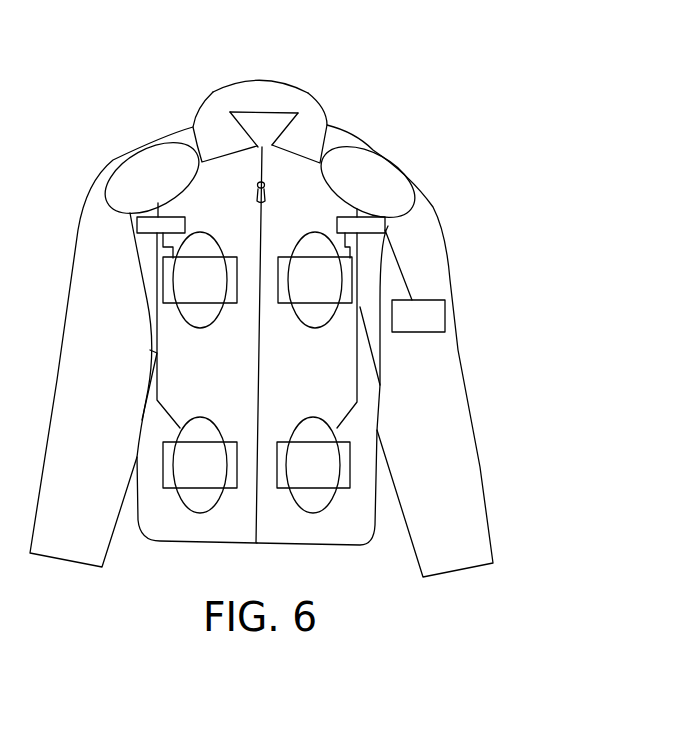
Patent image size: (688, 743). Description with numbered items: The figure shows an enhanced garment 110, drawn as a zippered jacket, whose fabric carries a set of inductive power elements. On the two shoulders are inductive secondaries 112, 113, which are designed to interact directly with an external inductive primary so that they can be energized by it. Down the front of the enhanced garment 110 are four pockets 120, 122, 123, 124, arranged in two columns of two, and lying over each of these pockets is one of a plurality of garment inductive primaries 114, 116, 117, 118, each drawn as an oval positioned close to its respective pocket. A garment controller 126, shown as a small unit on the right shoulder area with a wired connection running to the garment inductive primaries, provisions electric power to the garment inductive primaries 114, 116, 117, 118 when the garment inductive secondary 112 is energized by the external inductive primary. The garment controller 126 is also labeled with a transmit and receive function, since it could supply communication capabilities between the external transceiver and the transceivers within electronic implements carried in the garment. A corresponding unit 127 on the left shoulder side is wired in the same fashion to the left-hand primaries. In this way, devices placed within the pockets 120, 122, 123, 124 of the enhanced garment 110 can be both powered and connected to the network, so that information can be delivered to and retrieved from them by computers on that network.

The enhanced garment 110 is at (449, 212).
The inductive secondary 112 is at (353, 140).
The inductive secondary 113 is at (163, 142).
The garment inductive primary 114 is at (210, 233).
The garment inductive primary 116 is at (217, 420).
The garment inductive primary 117 is at (303, 233).
The garment inductive primary 118 is at (298, 420).
The pocket 120 is at (232, 305).
The pocket 122 is at (177, 490).
The pocket 123 is at (287, 305).
The pocket 124 is at (340, 490).
The garment controller 126 is at (385, 224).
The left control unit 127 is at (145, 238).